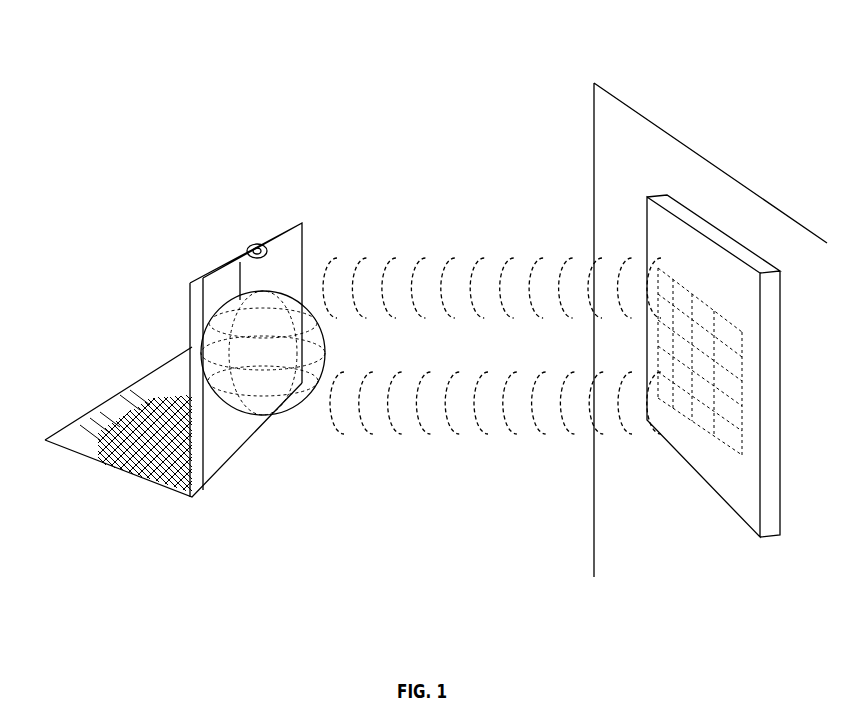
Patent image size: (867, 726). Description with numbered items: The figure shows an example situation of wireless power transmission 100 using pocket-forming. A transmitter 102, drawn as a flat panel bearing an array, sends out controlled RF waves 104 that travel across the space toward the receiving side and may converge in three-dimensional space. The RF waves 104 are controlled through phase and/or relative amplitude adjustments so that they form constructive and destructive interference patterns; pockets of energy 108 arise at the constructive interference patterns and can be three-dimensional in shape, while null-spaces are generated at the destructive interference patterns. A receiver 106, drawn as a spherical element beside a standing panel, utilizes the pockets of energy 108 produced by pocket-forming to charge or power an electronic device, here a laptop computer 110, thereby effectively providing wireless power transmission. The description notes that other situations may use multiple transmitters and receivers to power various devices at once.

The wireless power transmission 100 is at (120, 95).
The transmitter 102 is at (705, 225).
The RF waves 104 is at (485, 252).
The receiver 106 is at (243, 383).
The pocket of energy 108 is at (240, 277).
The laptop computer 110 is at (302, 224).